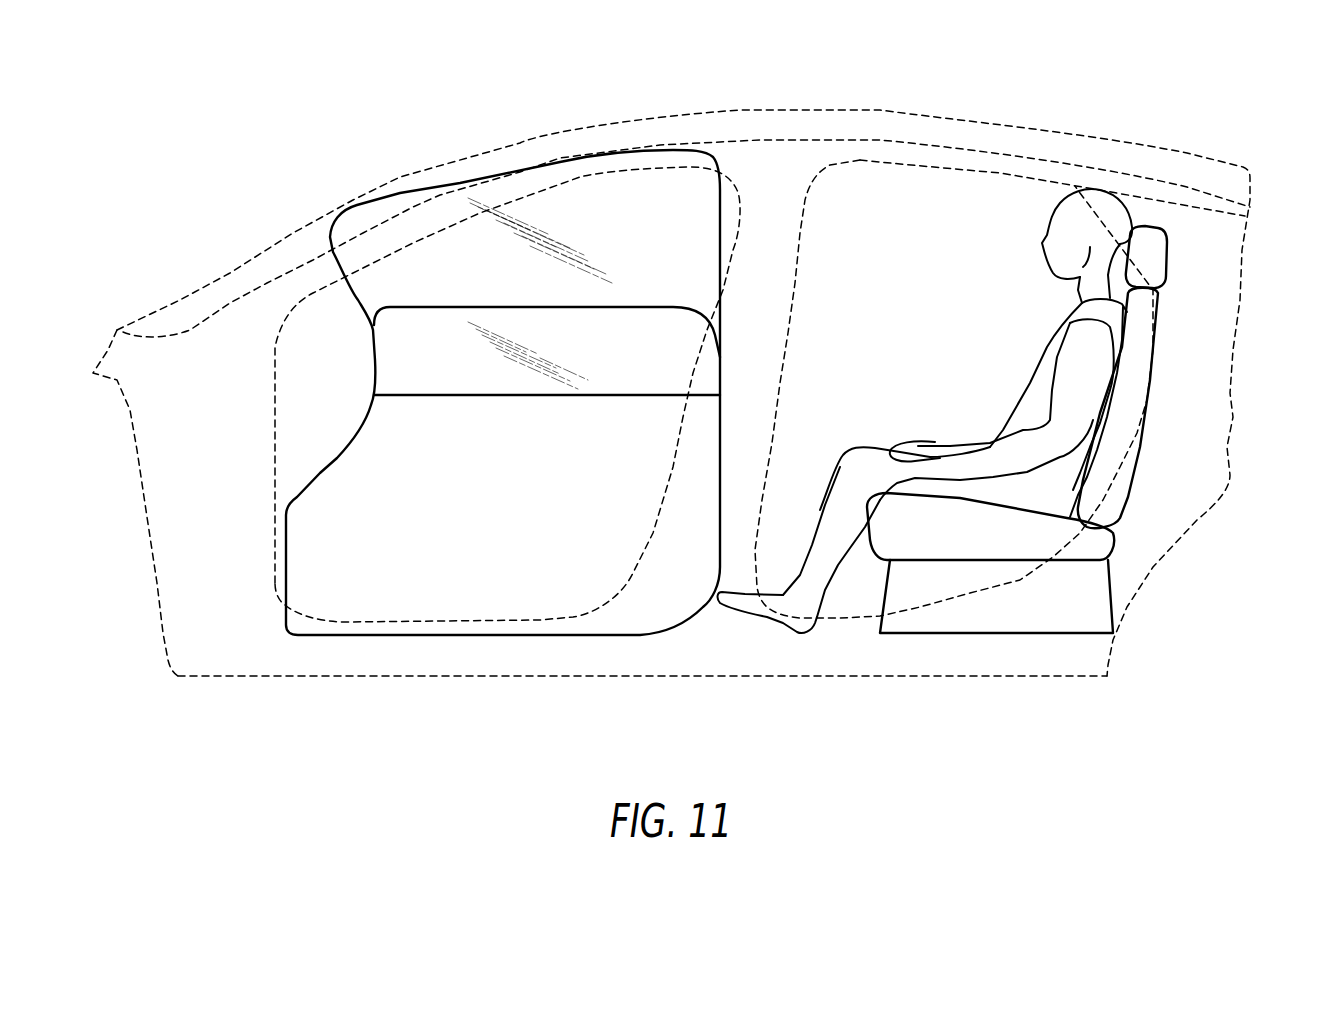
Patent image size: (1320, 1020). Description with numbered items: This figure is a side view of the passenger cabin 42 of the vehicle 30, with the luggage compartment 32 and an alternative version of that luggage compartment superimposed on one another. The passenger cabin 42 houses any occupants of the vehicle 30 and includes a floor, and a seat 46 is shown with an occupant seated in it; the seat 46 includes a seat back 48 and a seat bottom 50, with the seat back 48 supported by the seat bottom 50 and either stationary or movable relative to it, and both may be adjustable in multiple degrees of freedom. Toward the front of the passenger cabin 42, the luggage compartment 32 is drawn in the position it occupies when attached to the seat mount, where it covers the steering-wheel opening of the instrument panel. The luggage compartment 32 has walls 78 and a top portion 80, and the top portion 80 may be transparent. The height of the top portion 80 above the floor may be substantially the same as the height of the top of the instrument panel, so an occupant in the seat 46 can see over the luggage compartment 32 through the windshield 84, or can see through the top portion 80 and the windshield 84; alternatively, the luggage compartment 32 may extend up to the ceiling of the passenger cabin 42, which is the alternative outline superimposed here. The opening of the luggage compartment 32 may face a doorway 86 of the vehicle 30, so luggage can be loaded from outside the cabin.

The vehicle 30 is at (148, 93).
The luggage compartment 32 is at (373, 313).
The passenger cabin 42 is at (795, 532).
The seat 46 is at (1082, 429).
The seat back 48 is at (1140, 442).
The seat bottom 50 is at (1140, 495).
The walls 78 is at (320, 473).
The top portion 80 is at (412, 307).
The windshield 84 is at (230, 273).
The doorway 86 is at (527, 620).